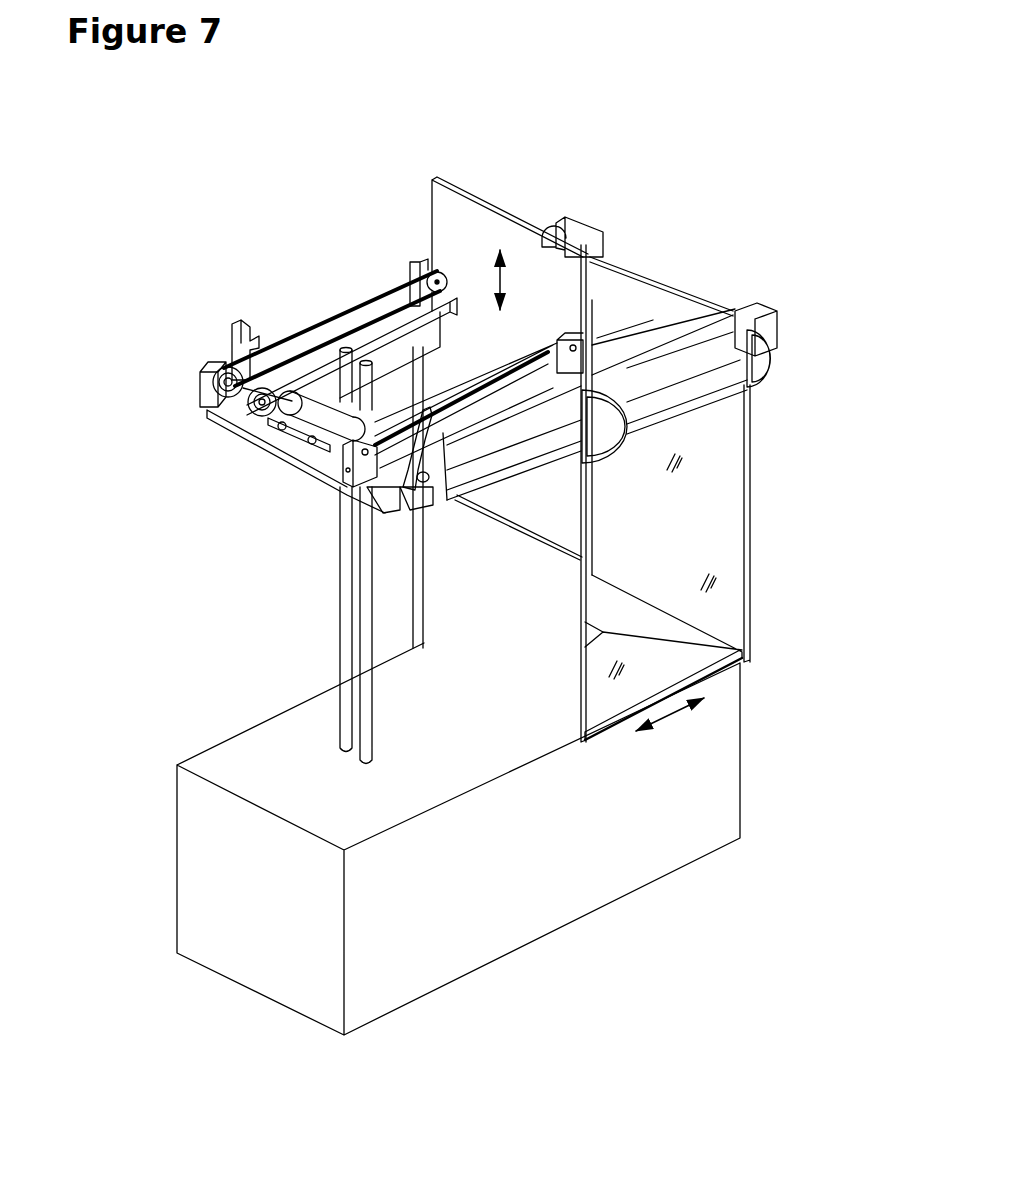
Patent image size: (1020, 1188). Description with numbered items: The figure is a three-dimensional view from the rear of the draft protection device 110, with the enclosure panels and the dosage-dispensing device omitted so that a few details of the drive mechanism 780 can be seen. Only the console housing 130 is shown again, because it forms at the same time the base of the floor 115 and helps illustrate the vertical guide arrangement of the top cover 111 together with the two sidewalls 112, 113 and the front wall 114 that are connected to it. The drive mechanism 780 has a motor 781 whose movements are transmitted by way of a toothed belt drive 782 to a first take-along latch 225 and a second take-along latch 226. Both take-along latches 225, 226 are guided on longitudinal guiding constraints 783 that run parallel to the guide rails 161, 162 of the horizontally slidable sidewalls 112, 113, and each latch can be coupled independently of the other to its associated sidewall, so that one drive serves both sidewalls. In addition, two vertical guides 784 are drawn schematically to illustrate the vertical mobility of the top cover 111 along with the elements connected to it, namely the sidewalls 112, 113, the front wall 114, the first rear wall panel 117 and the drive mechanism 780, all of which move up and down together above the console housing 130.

The draft protection device 110 is at (313, 247).
The top cover 111 is at (607, 298).
The sidewall 112 is at (698, 464).
The sidewall 113 is at (553, 223).
The front wall 114 is at (683, 295).
The floor 115 is at (658, 628).
The first rear wall panel 117 is at (483, 237).
The console housing 130 is at (685, 797).
The guide rail 161 is at (507, 447).
The guide rail 162 is at (503, 470).
The first take-along latch 225 is at (383, 478).
The second take-along latch 226 is at (240, 343).
The drive mechanism 780 is at (195, 372).
The motor 781 is at (328, 415).
The toothed belt drive 782 is at (323, 440).
The longitudinal guiding constraints 783 is at (503, 397).
The vertical guides 784 is at (367, 618).